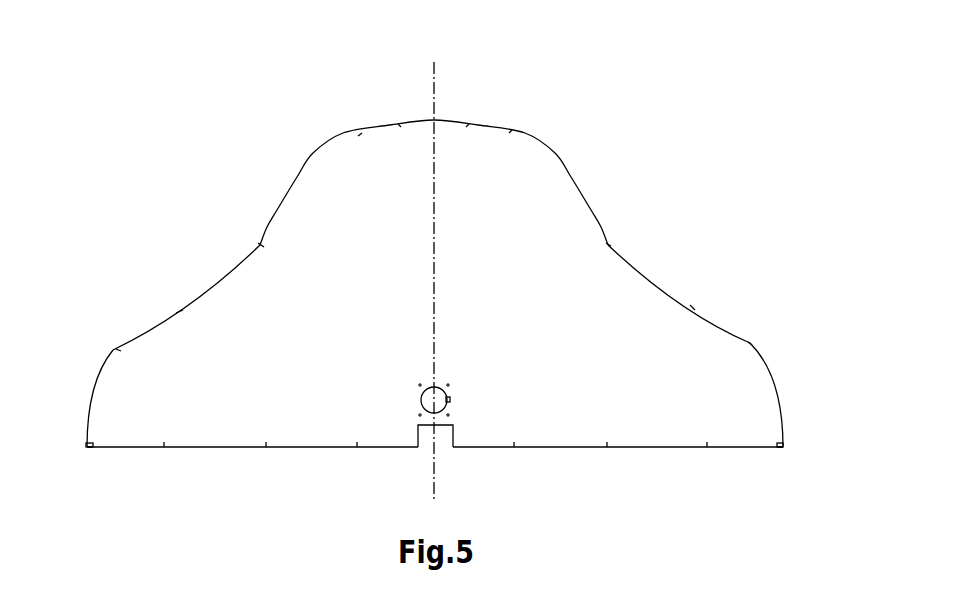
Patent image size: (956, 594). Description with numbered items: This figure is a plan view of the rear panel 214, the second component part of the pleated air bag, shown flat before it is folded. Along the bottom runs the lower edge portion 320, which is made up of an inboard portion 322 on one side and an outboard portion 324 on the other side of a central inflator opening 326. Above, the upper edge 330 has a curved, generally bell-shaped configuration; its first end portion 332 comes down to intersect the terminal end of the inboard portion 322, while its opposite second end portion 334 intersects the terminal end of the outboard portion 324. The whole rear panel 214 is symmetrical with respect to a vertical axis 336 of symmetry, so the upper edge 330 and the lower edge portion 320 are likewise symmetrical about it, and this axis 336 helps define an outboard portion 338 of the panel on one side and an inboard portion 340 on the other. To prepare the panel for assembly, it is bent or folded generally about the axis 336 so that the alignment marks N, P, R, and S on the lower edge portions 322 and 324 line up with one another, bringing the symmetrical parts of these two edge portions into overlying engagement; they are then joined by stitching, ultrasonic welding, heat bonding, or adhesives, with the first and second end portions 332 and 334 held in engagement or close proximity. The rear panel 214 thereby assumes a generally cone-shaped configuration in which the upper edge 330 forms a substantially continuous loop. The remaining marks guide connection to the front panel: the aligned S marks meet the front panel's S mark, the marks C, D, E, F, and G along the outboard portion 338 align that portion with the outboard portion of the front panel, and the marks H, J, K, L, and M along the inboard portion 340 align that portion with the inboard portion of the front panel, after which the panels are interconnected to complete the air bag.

The rear panel 214 is at (219, 166).
The lower edge portion 320 is at (373, 450).
The inboard portion 322 is at (203, 450).
The outboard portion 324 is at (550, 450).
The inflator opening 326 is at (439, 387).
The upper edge 330 is at (343, 133).
The first end portion 332 is at (85, 433).
The second end portion 334 is at (785, 428).
The axis of symmetry 336 is at (434, 62).
The outboard portion of the rear panel 338 is at (540, 225).
The inboard portion of the rear panel 340 is at (263, 303).
The alignment mark C is at (750, 345).
The alignment mark D is at (692, 308).
The alignment mark E is at (609, 246).
The alignment mark F is at (509, 133).
The alignment mark G is at (466, 127).
The alignment mark H is at (119, 350).
The alignment mark J is at (179, 313).
The alignment mark K is at (261, 246).
The alignment mark L is at (358, 136).
The alignment mark M is at (401, 127).
The alignment mark N is at (357, 446).
The alignment mark P is at (266, 446).
The alignment mark R is at (164, 446).
The alignment mark S is at (91, 450).